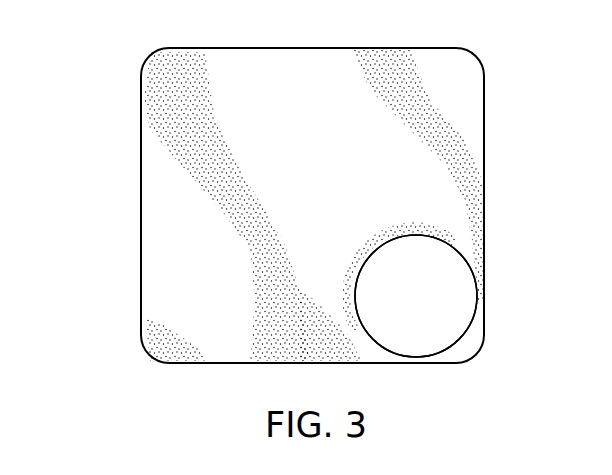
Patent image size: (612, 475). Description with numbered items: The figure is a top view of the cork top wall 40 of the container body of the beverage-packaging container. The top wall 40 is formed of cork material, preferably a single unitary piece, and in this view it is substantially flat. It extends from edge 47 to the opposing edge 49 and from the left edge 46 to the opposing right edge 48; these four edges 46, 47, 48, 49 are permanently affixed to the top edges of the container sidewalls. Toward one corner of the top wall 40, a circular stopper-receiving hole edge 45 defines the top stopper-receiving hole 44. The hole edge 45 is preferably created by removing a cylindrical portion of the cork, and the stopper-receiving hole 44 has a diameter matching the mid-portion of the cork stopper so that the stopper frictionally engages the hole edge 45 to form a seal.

The top wall 40 is at (92, 135).
The stopper-receiving hole 44 is at (448, 297).
The stopper-receiving hole edge 45 is at (402, 237).
The left edge 46 is at (142, 212).
The edge 47 is at (316, 48).
The right edge 48 is at (484, 186).
The opposing edge 49 is at (234, 363).